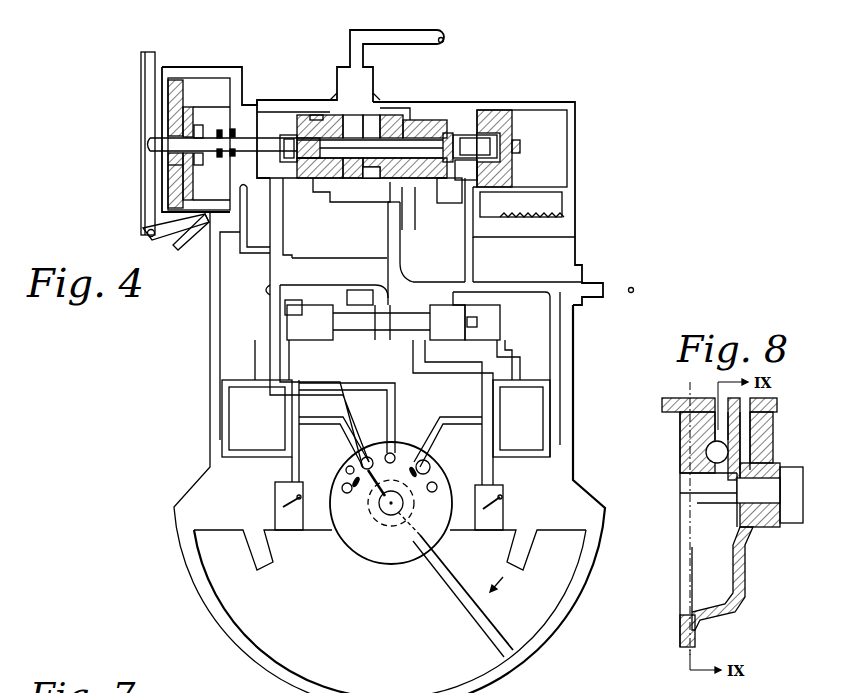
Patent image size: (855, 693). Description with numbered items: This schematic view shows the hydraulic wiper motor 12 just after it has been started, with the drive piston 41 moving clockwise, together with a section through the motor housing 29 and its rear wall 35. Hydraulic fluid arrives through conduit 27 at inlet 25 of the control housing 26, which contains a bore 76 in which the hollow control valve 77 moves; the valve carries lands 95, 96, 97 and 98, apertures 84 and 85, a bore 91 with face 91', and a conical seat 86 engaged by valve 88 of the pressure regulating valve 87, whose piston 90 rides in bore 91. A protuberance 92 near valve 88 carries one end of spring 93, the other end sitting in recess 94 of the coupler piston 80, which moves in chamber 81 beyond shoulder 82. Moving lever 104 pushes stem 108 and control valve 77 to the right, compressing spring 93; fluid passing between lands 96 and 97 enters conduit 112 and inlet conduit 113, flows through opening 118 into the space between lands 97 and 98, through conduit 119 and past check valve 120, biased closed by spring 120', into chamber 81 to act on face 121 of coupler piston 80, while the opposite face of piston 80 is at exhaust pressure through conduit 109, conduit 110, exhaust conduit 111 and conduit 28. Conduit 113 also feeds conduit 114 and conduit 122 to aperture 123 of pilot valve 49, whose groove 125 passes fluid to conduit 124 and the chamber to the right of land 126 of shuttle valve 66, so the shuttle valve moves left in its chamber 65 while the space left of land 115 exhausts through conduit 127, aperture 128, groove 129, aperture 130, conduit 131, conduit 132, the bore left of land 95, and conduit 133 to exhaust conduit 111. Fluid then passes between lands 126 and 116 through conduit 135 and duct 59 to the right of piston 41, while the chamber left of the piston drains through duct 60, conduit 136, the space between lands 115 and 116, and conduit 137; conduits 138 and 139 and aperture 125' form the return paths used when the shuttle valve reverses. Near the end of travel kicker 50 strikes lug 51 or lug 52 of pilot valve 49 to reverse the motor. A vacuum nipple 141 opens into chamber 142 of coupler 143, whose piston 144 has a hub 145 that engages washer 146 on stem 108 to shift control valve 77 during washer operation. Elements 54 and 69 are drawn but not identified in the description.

In FIG. 4, the wiper motor 12 is at (205, 368).
In FIG. 4, the inlet 25 is at (367, 77).
In FIG. 4, the control housing 26 is at (440, 110).
In FIG. 4, the conduit 27 is at (415, 30).
In FIG. 4, the conduit 28 is at (617, 280).
In FIG. 4, the housing 29 is at (577, 410).
In FIG. 8, the housing 29 is at (750, 557).
In FIG. 8, the rear wall 35 is at (731, 573).
In FIG. 4, the drive piston 41 is at (460, 597).
In FIG. 4, the pilot valve 49 is at (363, 547).
In FIG. 4, the kicker 50 is at (403, 472).
In FIG. 4, the lug 51 is at (415, 495).
In FIG. 4, the lug 52 is at (363, 520).
In FIG. 4, the pin 54 is at (278, 497).
In FIG. 4, the duct 59 is at (500, 493).
In FIG. 4, the duct 60 is at (278, 512).
In FIG. 8, the shuttle valve chamber 65 is at (715, 482).
In FIG. 4, the shuttle valve 66 is at (465, 337).
In FIG. 4, the passage 69 is at (413, 308).
In FIG. 4, the bore 76 is at (265, 110).
In FIG. 4, the control valve 77 is at (420, 115).
In FIG. 4, the coupler piston 80 is at (510, 107).
In FIG. 4, the chamber 81 is at (552, 136).
In FIG. 4, the shoulder 82 is at (473, 107).
In FIG. 4, the aperture 84 is at (373, 126).
In FIG. 4, the aperture 85 is at (362, 169).
In FIG. 4, the conical seat 86 is at (440, 115).
In FIG. 4, the pressure regulating valve 87 is at (415, 112).
In FIG. 4, the valve 88 is at (450, 133).
In FIG. 4, the piston 90 is at (293, 133).
In FIG. 4, the bore 91 is at (353, 126).
In FIG. 4, the face 91' is at (413, 94).
In FIG. 4, the protuberance 92 is at (462, 147).
In FIG. 4, the spring 93 is at (466, 173).
In FIG. 4, the recess 94 is at (483, 133).
In FIG. 4, the land 95 is at (292, 110).
In FIG. 4, the land 96 is at (337, 110).
In FIG. 4, the land 97 is at (410, 100).
In FIG. 4, the land 98 is at (438, 187).
In FIG. 4, the lever 104 is at (142, 78).
In FIG. 4, the stem 108 is at (145, 143).
In FIG. 4, the conduit 109 is at (477, 200).
In FIG. 4, the conduit 110 is at (463, 262).
In FIG. 4, the exhaust conduit 111 is at (513, 282).
In FIG. 8, the exhaust conduit 111 is at (750, 402).
In FIG. 4, the conduit 112 is at (320, 197).
In FIG. 4, the inlet conduit 113 is at (387, 213).
In FIG. 4, the conduit 114 is at (387, 240).
In FIG. 8, the conduit 114 is at (715, 398).
In FIG. 4, the land 115 is at (326, 328).
In FIG. 4, the land 116 is at (373, 312).
In FIG. 4, the opening 118 is at (418, 200).
In FIG. 4, the conduit 119 is at (422, 228).
In FIG. 4, the check valve 120 is at (532, 205).
In FIG. 4, the spring 120' is at (554, 201).
In FIG. 4, the face 121 is at (517, 173).
In FIG. 4, the conduit 122 is at (317, 255).
In FIG. 8, the conduit 122 is at (703, 467).
In FIG. 4, the aperture 123 is at (398, 455).
In FIG. 8, the aperture 123 is at (703, 453).
In FIG. 4, the conduit 124 is at (450, 405).
In FIG. 4, the groove 125 is at (428, 443).
In FIG. 4, the aperture 125' is at (451, 462).
In FIG. 4, the land 126 is at (460, 330).
In FIG. 4, the conduit 127 is at (257, 380).
In FIG. 4, the aperture 128 is at (395, 455).
In FIG. 4, the groove 129 is at (349, 466).
In FIG. 4, the aperture 130 is at (350, 495).
In FIG. 4, the conduit 131 is at (235, 453).
In FIG. 4, the conduit 132 is at (290, 222).
In FIG. 4, the conduit 133 is at (264, 200).
In FIG. 4, the conduit 135 is at (445, 363).
In FIG. 4, the conduit 136 is at (295, 435).
In FIG. 4, the conduit 137 is at (325, 298).
In FIG. 4, the conduit 138 is at (552, 423).
In FIG. 4, the conduit 139 is at (457, 298).
In FIG. 4, the vacuum coupling nipple 141 is at (195, 245).
In FIG. 4, the chamber 142 is at (210, 95).
In FIG. 4, the coupler 143 is at (197, 67).
In FIG. 4, the piston 144 is at (185, 185).
In FIG. 4, the hub 145 is at (200, 133).
In FIG. 4, the washer 146 is at (219, 158).